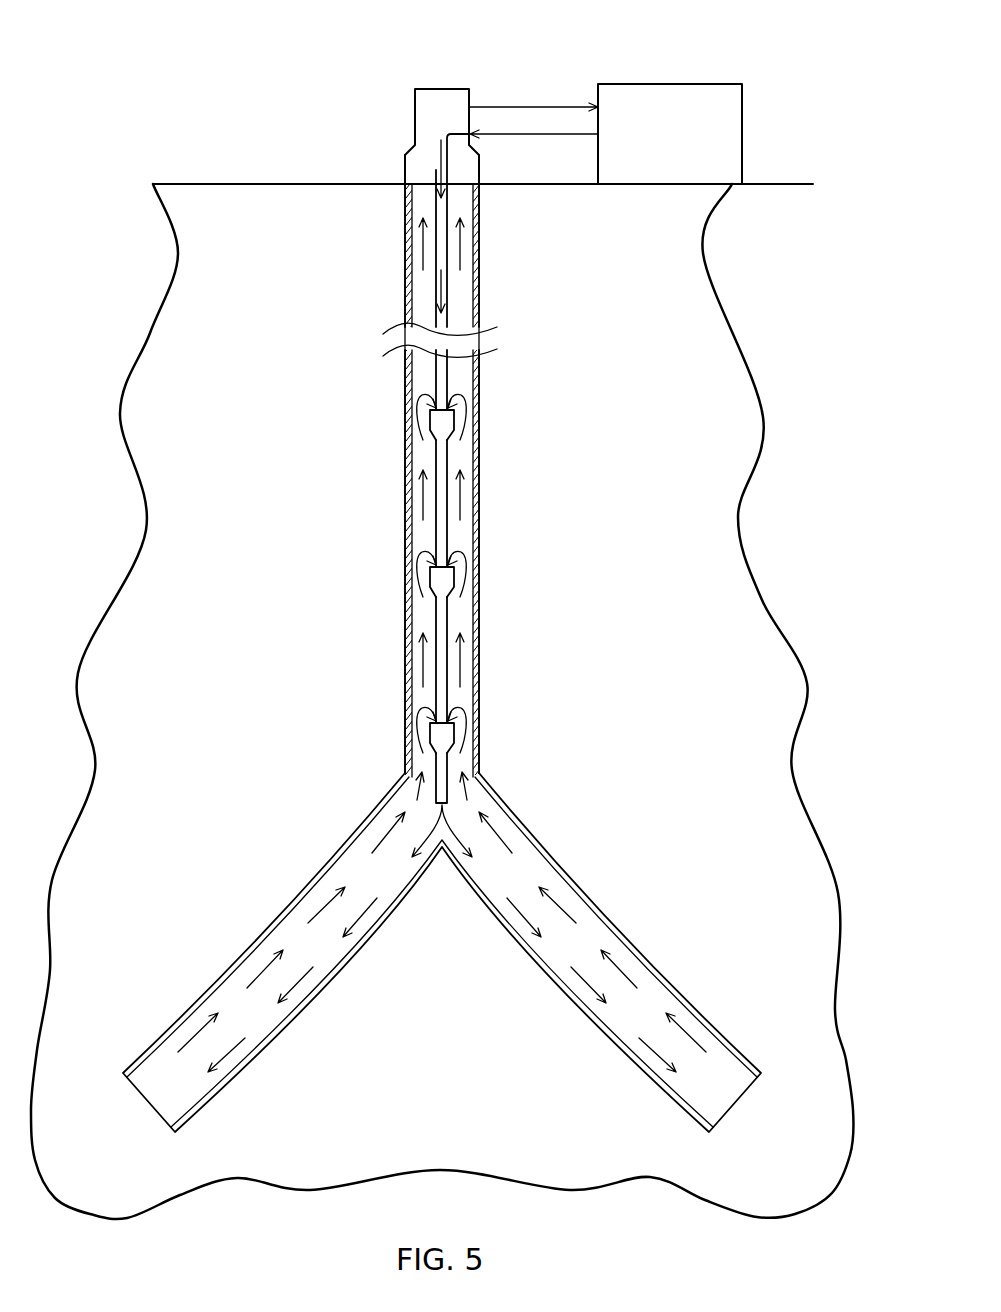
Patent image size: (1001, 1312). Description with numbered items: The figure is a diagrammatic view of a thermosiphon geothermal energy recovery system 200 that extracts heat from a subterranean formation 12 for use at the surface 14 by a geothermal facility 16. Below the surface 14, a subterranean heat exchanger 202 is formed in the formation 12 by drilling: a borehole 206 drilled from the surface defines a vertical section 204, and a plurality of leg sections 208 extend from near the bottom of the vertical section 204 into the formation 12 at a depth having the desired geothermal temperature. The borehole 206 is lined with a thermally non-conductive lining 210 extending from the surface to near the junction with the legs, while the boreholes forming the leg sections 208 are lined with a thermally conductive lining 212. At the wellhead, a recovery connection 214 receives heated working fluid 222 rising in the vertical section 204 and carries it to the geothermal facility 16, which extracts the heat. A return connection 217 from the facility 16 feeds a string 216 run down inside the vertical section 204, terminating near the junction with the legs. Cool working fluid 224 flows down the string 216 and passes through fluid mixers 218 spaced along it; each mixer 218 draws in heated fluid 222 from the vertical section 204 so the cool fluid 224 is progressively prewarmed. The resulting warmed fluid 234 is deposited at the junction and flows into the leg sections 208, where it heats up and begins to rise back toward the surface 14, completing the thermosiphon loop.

The geothermal energy recovery system 200 is at (124, 92).
The subterranean heat exchanger 202 is at (688, 718).
The subterranean formation 12 is at (233, 422).
The surface 14 is at (238, 183).
The geothermal facility 16 is at (705, 116).
The recovery connection 214 is at (517, 105).
The return connection 217 is at (535, 135).
The thermally non-conductive lining 210 is at (403, 252).
The borehole 206 is at (480, 520).
The string 216 is at (442, 322).
The vertical section 204 is at (420, 610).
The fluid mixer 218 is at (445, 427).
The heated working fluid 222 is at (460, 245).
The cool working fluid 224 is at (436, 170).
The warmed fluid 234 is at (450, 827).
The thermally conductive lining 212 is at (340, 845).
The leg sections 208 is at (230, 1007).